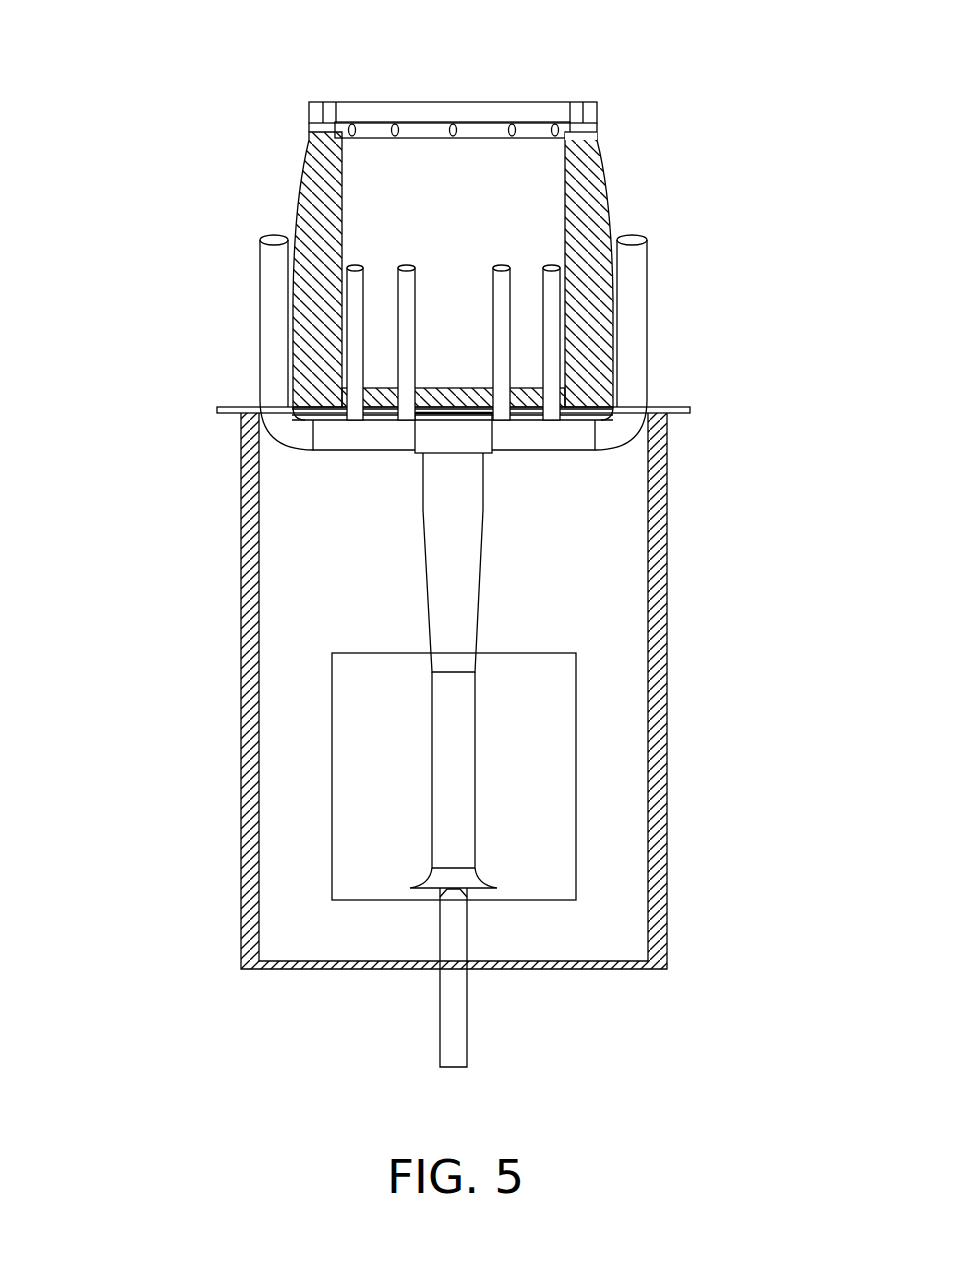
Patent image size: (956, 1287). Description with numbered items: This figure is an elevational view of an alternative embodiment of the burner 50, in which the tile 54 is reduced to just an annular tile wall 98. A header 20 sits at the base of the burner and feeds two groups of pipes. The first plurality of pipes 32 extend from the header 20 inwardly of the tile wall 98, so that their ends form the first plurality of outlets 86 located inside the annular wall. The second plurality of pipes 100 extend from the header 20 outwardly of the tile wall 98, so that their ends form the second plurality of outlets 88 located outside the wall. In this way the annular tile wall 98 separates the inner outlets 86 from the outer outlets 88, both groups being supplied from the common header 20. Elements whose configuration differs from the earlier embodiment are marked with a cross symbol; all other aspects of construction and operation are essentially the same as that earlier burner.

The header 20 is at (326, 514).
The first plurality of pipes 32 is at (300, 377).
The burner 50 is at (178, 260).
The tile 54 is at (620, 194).
The first plurality of outlets 86 is at (357, 266).
The second plurality of outlets 88 is at (277, 236).
The annular tile wall 98 is at (313, 165).
The second plurality of pipes 100 is at (273, 342).